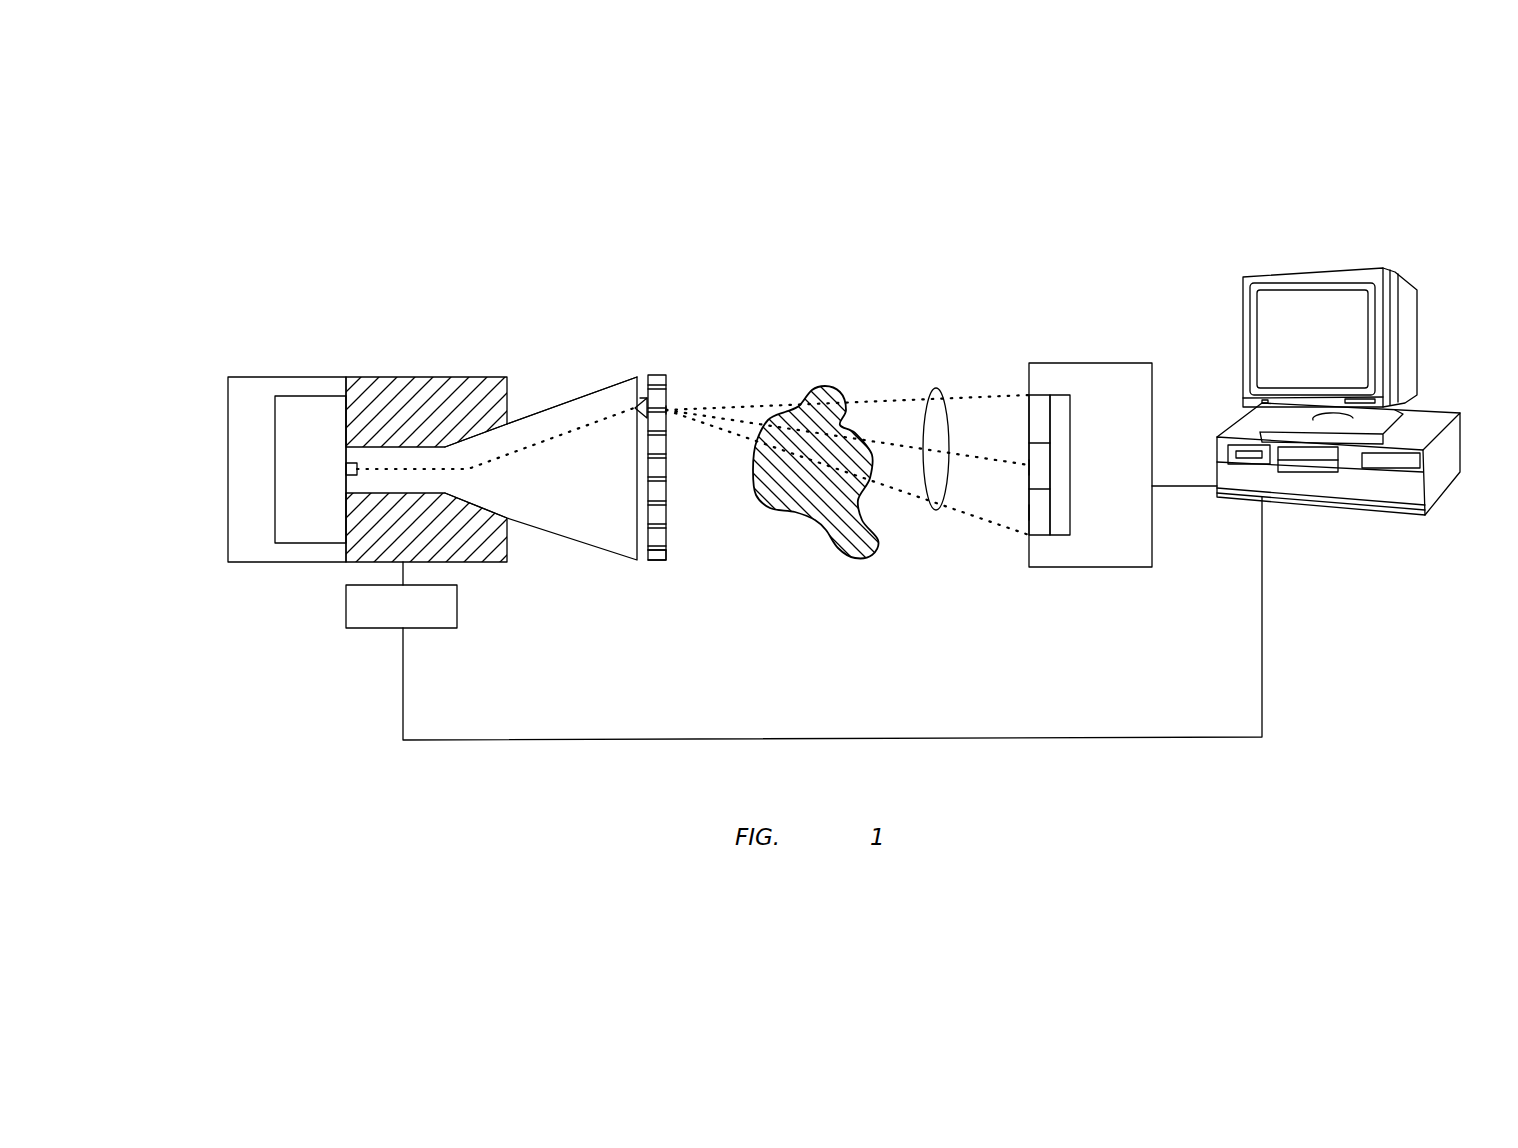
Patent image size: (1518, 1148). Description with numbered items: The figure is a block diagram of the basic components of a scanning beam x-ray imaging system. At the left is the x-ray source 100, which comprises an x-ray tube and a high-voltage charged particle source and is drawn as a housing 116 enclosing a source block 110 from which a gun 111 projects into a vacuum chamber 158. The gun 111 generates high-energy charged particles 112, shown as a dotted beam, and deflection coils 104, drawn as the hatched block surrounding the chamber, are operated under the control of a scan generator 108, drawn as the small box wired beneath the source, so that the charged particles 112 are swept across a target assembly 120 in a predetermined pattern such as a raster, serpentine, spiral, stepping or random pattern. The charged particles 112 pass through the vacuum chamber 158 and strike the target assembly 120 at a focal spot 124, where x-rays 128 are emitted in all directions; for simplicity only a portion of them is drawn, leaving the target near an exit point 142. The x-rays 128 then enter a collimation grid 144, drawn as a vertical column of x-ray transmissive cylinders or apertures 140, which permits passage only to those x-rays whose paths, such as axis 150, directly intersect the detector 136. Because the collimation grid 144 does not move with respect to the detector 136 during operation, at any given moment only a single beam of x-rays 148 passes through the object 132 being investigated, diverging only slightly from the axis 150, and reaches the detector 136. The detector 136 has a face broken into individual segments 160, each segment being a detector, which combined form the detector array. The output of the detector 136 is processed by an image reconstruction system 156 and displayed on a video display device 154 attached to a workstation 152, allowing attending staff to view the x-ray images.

The x-ray source 100 is at (347, 266).
The deflection coils 104 is at (432, 377).
The scan generator 108 is at (346, 605).
The radiation source 110 is at (275, 503).
The gun 111 is at (346, 464).
The high-energy charged particles 112 is at (532, 447).
The source housing 116 is at (228, 410).
The target assembly 120 is at (637, 515).
The focal spot 124 is at (634, 408).
The x-rays 128 is at (638, 400).
The object 132 is at (828, 387).
The detector 136 is at (1050, 535).
The x-ray transmissive cylinders or apertures 140 is at (667, 547).
The exit point 142 is at (665, 409).
The collimation grid 144 is at (655, 560).
The x-rays 148 is at (934, 390).
The axis 150 is at (964, 455).
The workstation 152 is at (1315, 507).
The video display device 154 is at (1420, 383).
The image reconstruction system 156 is at (1110, 567).
The vacuum chamber 158 is at (543, 408).
The individual segments 160 is at (1027, 513).